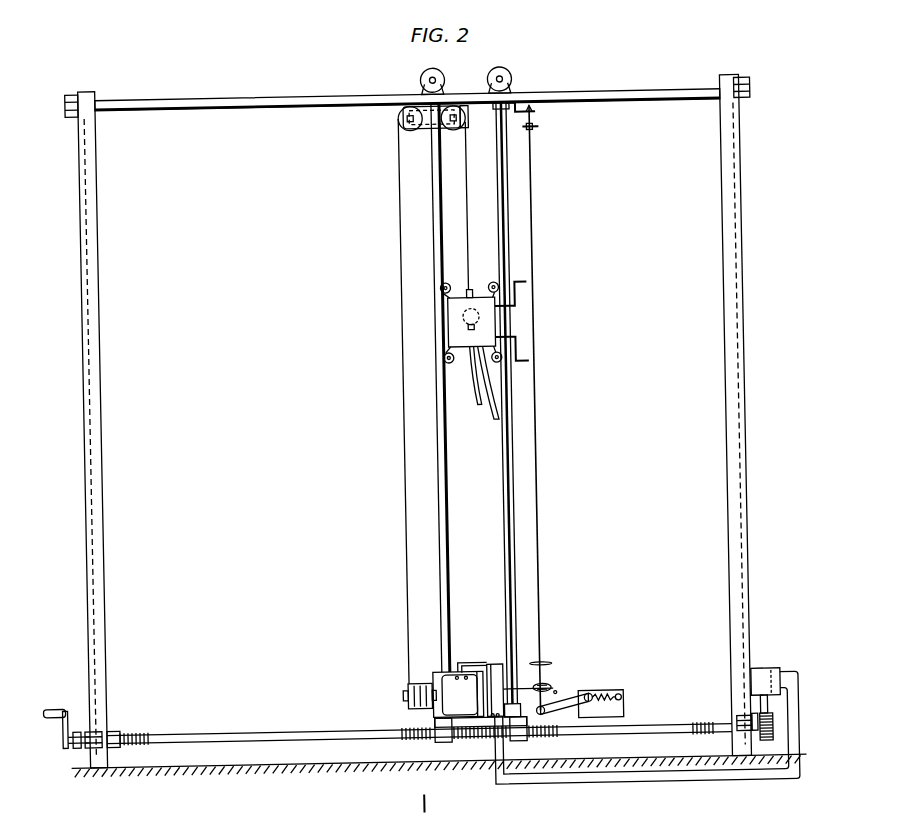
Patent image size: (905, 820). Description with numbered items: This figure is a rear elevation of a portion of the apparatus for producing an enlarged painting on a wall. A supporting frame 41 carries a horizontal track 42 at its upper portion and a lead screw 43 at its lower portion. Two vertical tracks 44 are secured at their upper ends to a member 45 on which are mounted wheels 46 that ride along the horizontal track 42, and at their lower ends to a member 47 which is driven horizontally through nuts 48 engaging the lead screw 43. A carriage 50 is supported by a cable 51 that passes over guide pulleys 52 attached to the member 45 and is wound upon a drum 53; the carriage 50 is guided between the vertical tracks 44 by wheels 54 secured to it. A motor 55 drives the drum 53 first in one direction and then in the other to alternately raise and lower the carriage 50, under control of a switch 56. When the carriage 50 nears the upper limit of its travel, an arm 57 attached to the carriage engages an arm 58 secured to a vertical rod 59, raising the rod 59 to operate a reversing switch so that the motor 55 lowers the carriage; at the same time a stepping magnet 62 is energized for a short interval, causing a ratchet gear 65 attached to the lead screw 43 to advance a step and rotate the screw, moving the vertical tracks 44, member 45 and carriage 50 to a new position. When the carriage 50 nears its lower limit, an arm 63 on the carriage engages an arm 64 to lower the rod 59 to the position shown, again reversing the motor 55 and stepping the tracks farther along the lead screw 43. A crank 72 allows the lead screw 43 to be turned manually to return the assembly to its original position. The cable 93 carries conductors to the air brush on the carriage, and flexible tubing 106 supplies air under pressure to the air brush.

The supporting frame 41 is at (97, 192).
The horizontal track 42 is at (583, 101).
The lead screw 43 is at (420, 740).
The vertical tracks 44 is at (432, 193).
The member 45 is at (469, 112).
The wheels 46 is at (495, 71).
The member 47 is at (471, 739).
The nuts 48 is at (440, 739).
The carriage 50 is at (476, 300).
The cable 51 is at (404, 193).
The guide pulleys 52 is at (447, 131).
The drum 53 is at (410, 686).
The wheels 54 is at (450, 362).
The motor 55 is at (445, 678).
The switch 56 is at (498, 663).
The arm 57 is at (527, 282).
The arm 58 is at (539, 129).
The vertical rod 59 is at (531, 193).
The stepping magnet 62 is at (759, 668).
The arm 63 is at (529, 366).
The arm 64 is at (547, 667).
The ratchet gear 65 is at (772, 736).
The crank 72 is at (50, 710).
The cable 93 is at (493, 423).
The flexible tubing 106 is at (477, 396).